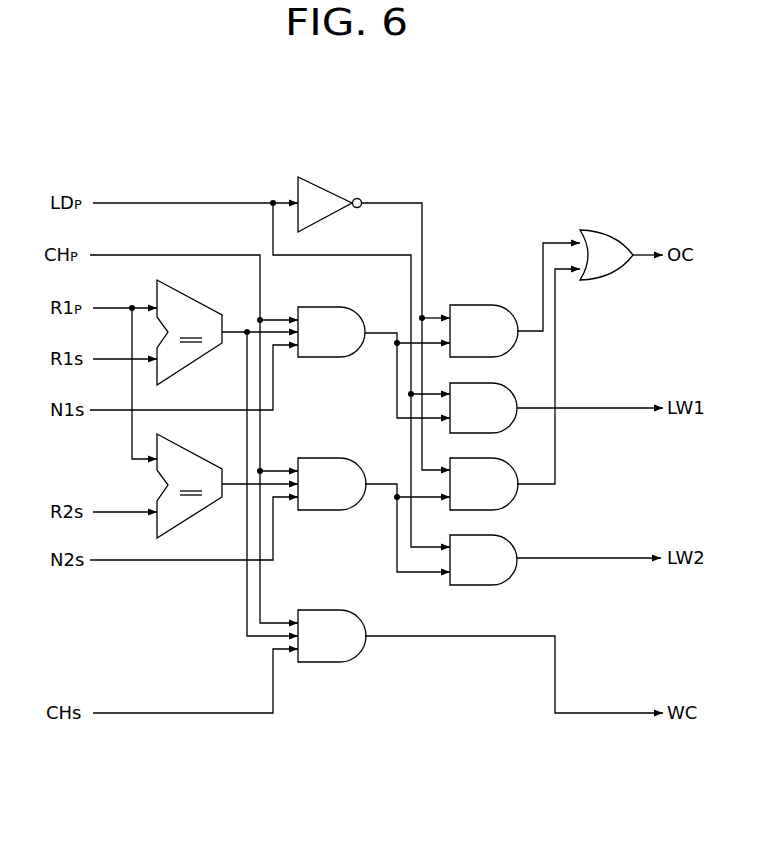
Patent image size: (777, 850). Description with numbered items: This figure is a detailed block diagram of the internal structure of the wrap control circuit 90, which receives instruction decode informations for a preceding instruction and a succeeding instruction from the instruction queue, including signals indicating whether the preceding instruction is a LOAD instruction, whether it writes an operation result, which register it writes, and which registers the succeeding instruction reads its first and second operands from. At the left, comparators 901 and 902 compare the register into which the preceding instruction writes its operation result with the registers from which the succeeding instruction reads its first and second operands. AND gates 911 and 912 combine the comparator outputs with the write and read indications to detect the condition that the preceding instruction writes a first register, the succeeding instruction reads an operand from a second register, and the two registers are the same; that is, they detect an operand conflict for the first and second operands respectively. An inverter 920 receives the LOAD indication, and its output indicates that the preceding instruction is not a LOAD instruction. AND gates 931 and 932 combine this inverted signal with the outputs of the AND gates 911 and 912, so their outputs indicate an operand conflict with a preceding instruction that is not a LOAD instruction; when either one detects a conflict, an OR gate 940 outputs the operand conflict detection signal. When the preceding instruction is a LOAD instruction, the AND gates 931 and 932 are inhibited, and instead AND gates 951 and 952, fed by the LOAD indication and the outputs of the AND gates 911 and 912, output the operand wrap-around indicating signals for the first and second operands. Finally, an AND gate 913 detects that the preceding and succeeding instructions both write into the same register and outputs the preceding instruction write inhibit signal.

The wrap control circuit 90 is at (489, 143).
The comparator 901 is at (188, 298).
The comparator 902 is at (199, 452).
The AND gate 911 is at (347, 307).
The AND gate 912 is at (340, 458).
The AND gate 913 is at (338, 610).
The inverter 920 is at (326, 178).
The AND gate 931 is at (470, 305).
The AND gate 932 is at (494, 459).
The OR gate 940 is at (613, 229).
The AND gate 951 is at (491, 384).
The AND gate 952 is at (504, 536).